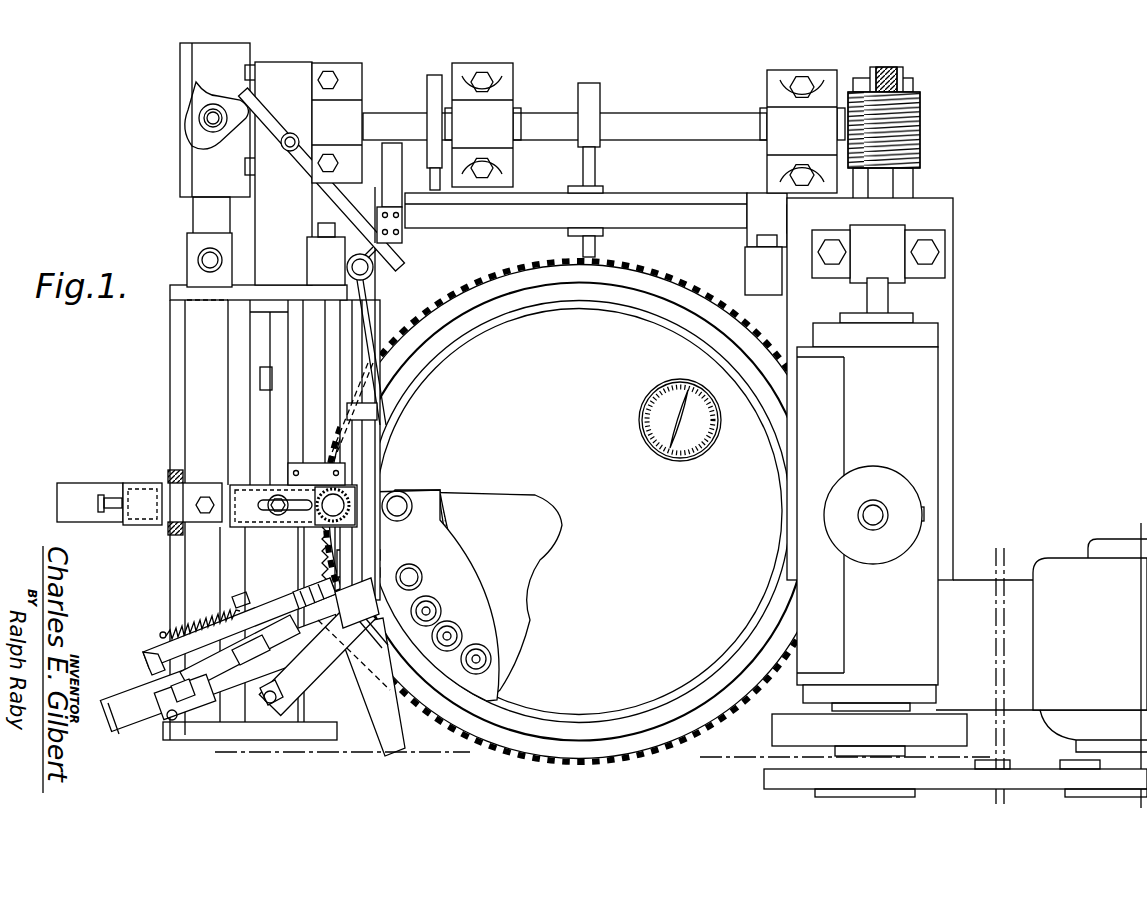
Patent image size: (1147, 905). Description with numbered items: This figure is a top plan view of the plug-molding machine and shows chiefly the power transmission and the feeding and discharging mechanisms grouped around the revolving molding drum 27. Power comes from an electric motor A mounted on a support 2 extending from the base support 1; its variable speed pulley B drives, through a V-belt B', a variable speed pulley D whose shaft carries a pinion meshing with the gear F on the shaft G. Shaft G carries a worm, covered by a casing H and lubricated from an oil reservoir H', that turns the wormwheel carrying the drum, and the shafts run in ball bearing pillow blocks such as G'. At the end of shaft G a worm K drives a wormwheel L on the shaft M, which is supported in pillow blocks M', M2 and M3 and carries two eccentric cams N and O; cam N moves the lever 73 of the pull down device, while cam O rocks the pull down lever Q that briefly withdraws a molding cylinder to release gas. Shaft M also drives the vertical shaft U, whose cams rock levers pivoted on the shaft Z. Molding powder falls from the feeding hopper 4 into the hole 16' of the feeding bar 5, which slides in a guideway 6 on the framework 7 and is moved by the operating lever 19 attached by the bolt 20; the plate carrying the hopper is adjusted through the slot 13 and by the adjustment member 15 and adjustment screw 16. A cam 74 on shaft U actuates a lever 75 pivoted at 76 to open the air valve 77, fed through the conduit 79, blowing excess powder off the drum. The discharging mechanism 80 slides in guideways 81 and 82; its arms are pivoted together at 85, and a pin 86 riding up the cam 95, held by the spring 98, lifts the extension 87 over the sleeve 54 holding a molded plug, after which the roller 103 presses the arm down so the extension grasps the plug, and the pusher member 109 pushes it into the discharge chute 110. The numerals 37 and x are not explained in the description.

The base support 1 is at (955, 339).
The support 2 is at (1005, 570).
The feeding hopper 4 is at (345, 495).
The feeding bar 5 is at (72, 483).
The guideway 6 is at (172, 476).
The machine framework 7 is at (170, 385).
The slot 13 is at (296, 485).
The adjustment member 15 is at (135, 483).
The adjustment screw 16 is at (69, 502).
The hole 16' is at (317, 560).
The operating lever 19 is at (185, 345).
The bolt 20 is at (205, 497).
The molding drum 27 is at (683, 270).
The workpiece 37 is at (548, 517).
The sleeve 54 is at (428, 575).
The lever 73 is at (435, 190).
The cam 74 is at (190, 125).
The lever 75 is at (280, 113).
The pivot 76 is at (289, 151).
The air valve 77 is at (375, 270).
The conduit 79 is at (380, 345).
The discharging mechanism 80 is at (131, 700).
The guideway 81 is at (240, 725).
The guideway 82 is at (152, 655).
The pivot 85 is at (115, 733).
The pin 86 is at (235, 680).
The extension 87 is at (375, 640).
The cam 95 is at (240, 652).
The spring 98 is at (190, 622).
The roller 103 is at (165, 705).
The pusher member 109 is at (366, 570).
The discharge chute 110 is at (418, 753).
The electric motor A is at (1070, 555).
The variable speed pulley B is at (1071, 795).
The V-belt B' is at (975, 791).
The variable speed pulley D is at (795, 790).
The gear F is at (778, 745).
The shaft G is at (925, 300).
The ball bearing pillow block G' is at (901, 389).
The casing H is at (903, 529).
The oil reservoir H' is at (920, 515).
The worm K is at (922, 122).
The wormwheel L is at (903, 76).
The shaft M is at (565, 111).
The pillow block M' is at (802, 131).
The pillow block M2 is at (483, 125).
The pillow block M3 is at (337, 123).
The eccentric cam N is at (437, 75).
The eccentric cam O is at (602, 94).
The pull down lever Q is at (597, 181).
The vertical shaft U is at (200, 114).
The shaft Z is at (198, 258).
The rod x is at (650, 201).